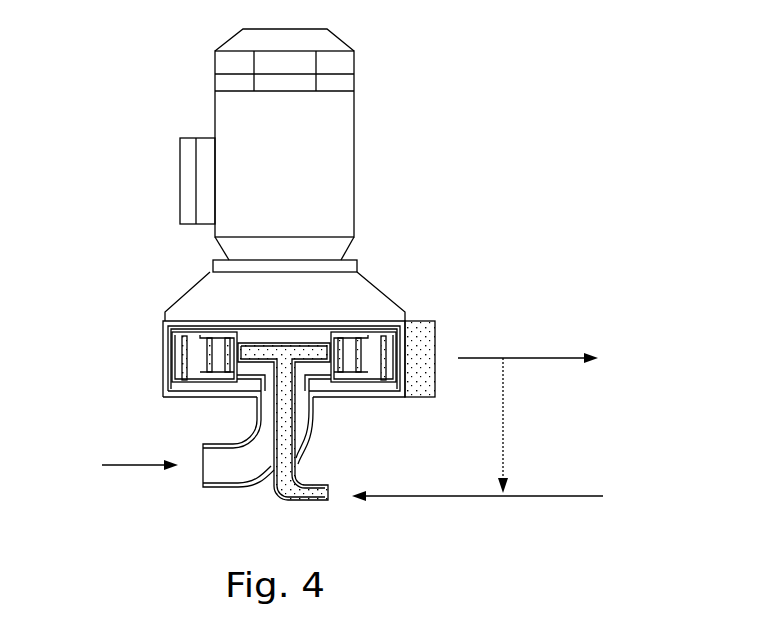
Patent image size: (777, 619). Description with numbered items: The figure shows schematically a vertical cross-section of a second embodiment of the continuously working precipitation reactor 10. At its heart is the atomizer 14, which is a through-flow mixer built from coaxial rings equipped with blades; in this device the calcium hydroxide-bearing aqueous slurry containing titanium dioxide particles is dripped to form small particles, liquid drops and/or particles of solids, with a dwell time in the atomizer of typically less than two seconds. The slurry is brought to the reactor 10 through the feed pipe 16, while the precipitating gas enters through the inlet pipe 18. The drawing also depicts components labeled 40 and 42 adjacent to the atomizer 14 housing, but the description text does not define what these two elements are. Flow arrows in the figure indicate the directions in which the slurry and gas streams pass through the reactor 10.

The precipitation reactor 10 is at (426, 152).
The atomizer 14 is at (141, 335).
The feed pipe 16 is at (278, 472).
The inlet pipe 18 is at (232, 468).
The housing wall 40 is at (168, 380).
The insulation block 42 is at (423, 347).